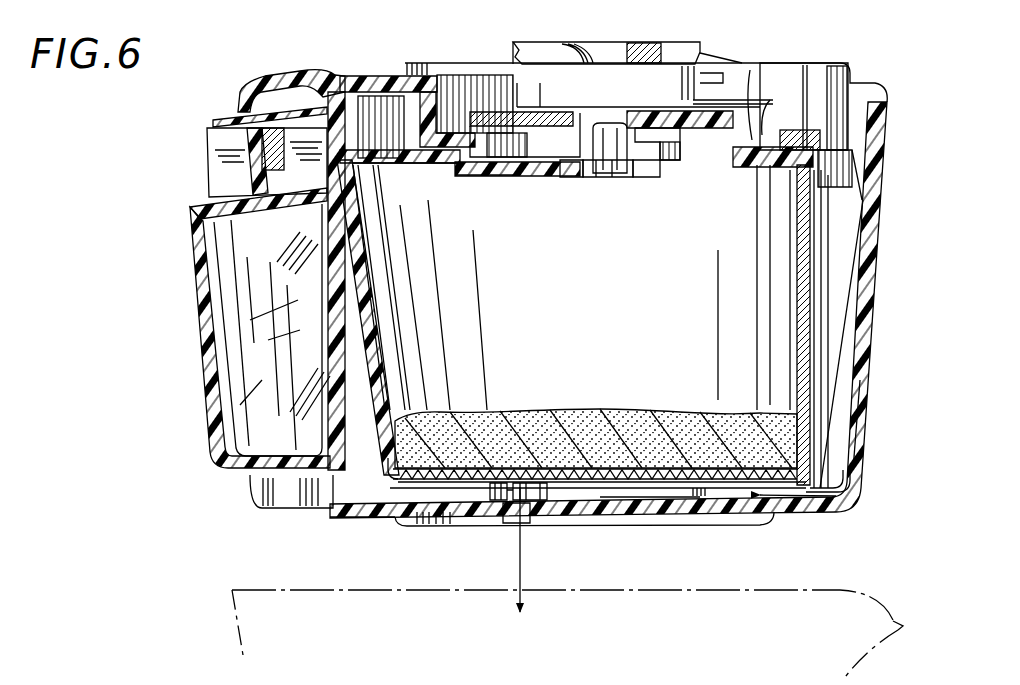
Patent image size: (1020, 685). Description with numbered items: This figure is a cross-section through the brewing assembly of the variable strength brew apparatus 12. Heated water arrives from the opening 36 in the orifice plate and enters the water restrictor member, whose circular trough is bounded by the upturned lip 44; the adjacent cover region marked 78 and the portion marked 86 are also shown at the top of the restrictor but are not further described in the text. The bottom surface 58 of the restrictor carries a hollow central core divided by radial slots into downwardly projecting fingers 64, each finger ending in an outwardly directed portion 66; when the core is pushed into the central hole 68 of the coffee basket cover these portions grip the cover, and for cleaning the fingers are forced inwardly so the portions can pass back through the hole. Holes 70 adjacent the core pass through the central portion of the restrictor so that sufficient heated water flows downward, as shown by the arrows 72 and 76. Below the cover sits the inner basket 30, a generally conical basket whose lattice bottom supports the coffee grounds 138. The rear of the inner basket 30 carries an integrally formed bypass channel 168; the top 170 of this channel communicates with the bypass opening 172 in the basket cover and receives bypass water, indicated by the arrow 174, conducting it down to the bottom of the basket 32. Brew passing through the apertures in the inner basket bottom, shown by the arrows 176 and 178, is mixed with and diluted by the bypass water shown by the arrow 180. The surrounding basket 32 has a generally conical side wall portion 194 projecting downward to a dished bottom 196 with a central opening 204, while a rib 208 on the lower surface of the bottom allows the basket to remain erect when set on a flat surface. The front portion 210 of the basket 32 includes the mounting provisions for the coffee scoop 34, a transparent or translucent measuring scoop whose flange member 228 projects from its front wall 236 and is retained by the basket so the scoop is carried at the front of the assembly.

The variable strength brew apparatus 12 is at (290, 590).
The inner basket 30 is at (380, 328).
The basket 32 is at (868, 347).
The coffee scoop member 34 is at (212, 460).
The opening 36 is at (632, 60).
The upturned lip 44 is at (748, 135).
The bottom surface 58 is at (757, 160).
The downwardly projecting fingers 64 is at (617, 178).
The outwardly directed portion 66 is at (577, 177).
The central hole 68 is at (620, 140).
The holes 70 is at (545, 143).
The arrow 72 is at (560, 140).
The arrow 76 is at (576, 90).
The lid top 78 is at (748, 103).
The hinge 86 is at (757, 143).
The coffee grounds 138 is at (700, 410).
The bypass channel 168 is at (836, 277).
The top of the bypass channel 170 is at (834, 190).
The bypass opening 172 is at (853, 157).
The arrow 174 is at (858, 255).
The arrow 176 is at (457, 498).
The arrow 178 is at (620, 495).
The arrow 180 is at (848, 508).
The side wall portion 194 is at (867, 410).
The dished bottom 196 is at (817, 510).
The central opening 204 is at (527, 522).
The rib 208 is at (680, 513).
The front portion 210 is at (352, 395).
The flange member 228 is at (253, 182).
The front wall 236 is at (222, 200).